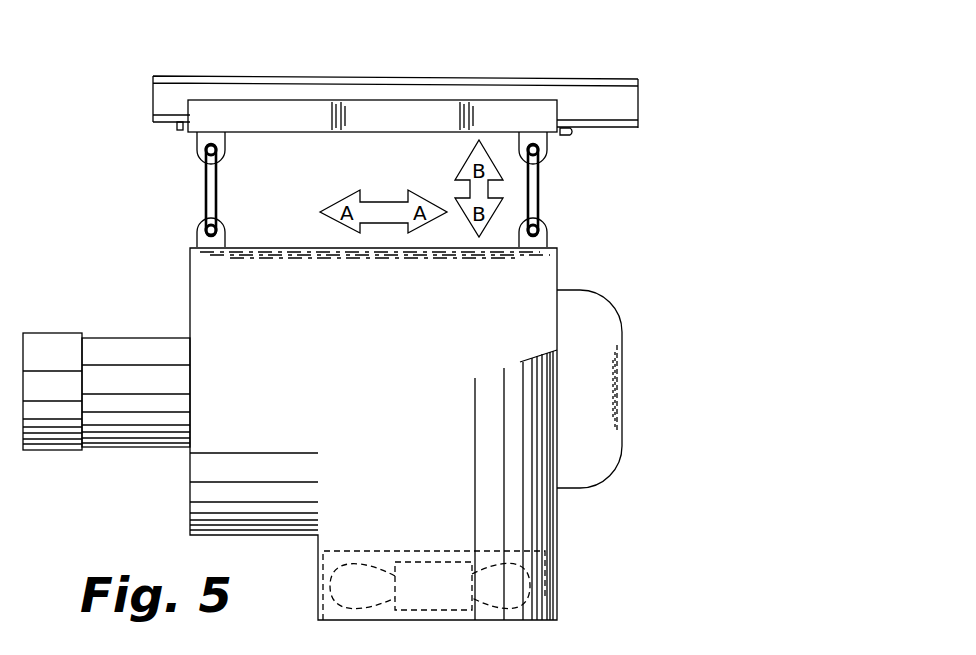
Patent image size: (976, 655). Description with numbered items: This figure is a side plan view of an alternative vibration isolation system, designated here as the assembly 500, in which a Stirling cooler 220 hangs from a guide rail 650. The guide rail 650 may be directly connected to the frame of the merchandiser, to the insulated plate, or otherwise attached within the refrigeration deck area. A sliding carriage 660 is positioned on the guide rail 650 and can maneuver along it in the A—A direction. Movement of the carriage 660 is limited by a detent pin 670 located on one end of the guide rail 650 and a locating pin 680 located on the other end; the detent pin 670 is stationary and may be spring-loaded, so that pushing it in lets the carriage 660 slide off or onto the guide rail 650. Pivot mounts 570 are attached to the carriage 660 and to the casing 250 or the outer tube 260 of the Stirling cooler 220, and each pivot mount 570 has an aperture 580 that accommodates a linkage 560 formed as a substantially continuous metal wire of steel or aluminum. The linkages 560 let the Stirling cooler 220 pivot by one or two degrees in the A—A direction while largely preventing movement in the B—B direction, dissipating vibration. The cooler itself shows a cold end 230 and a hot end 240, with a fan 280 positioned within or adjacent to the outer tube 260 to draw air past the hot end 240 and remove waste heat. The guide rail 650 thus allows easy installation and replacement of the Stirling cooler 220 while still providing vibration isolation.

The mounting assembly 500 is at (398, 88).
The guide rail 650 is at (638, 100).
The sliding carriage 660 is at (295, 107).
The locating pin 680 is at (173, 130).
The detent pin 670 is at (565, 132).
The pivot mount 570 is at (227, 138).
The linkage 560 is at (218, 191).
The aperture 580 is at (204, 156).
The Stirling cooler 220 is at (643, 364).
The casing 250 is at (603, 380).
The outer tube 260 is at (557, 510).
The fan 280 is at (528, 598).
The cold end 230 is at (60, 453).
The hot end 240 is at (183, 448).